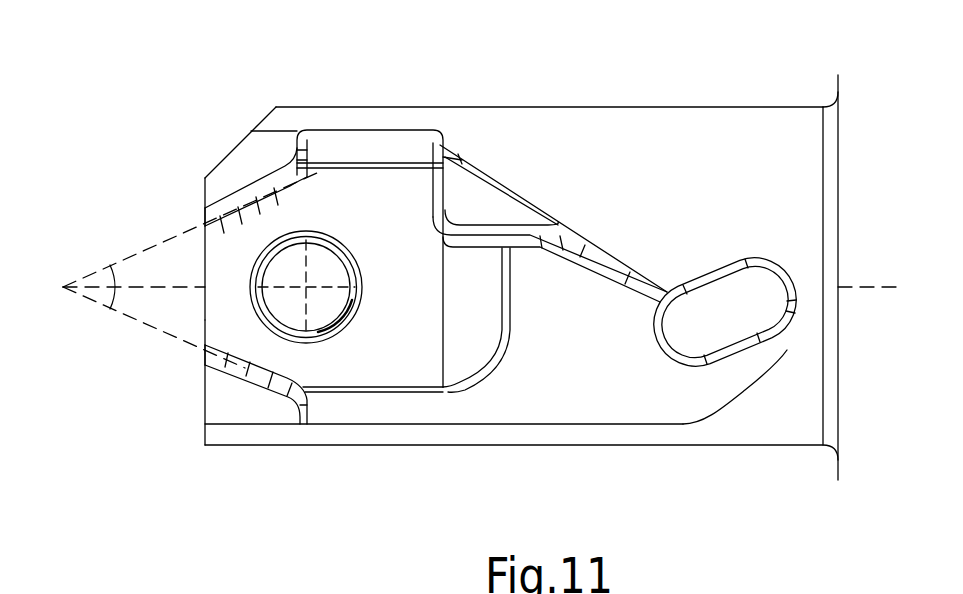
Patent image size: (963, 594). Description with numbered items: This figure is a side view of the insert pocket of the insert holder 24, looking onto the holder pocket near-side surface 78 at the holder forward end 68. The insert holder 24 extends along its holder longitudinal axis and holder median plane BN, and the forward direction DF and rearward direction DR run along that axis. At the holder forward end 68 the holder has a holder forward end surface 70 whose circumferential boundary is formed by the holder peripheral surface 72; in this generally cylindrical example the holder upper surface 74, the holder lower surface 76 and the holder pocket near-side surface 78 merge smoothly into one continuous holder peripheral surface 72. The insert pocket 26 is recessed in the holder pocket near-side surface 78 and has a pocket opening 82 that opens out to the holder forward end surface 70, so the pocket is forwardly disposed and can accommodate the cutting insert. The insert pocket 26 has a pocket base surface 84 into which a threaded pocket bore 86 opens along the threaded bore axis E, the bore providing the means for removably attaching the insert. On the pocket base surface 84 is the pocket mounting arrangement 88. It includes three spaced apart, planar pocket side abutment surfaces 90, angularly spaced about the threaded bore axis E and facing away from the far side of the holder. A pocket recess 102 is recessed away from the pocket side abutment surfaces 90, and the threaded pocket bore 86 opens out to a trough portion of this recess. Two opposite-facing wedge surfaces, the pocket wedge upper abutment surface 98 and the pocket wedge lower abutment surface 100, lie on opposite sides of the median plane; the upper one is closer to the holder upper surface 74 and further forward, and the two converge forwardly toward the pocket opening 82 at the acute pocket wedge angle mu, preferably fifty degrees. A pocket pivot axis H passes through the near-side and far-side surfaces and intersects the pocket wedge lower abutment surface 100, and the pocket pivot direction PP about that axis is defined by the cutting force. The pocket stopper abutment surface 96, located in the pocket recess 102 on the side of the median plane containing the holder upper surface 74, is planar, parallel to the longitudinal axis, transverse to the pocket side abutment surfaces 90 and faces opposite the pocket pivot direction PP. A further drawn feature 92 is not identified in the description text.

The insert holder 24 is at (674, 77).
The insert pocket 26 is at (405, 353).
The holder forward end 68 is at (191, 185).
The holder forward end surface 70 is at (203, 403).
The holder peripheral surface 72 is at (498, 131).
The holder upper surface 74 is at (578, 107).
The holder lower surface 76 is at (653, 447).
The holder pocket near-side surface 78 is at (655, 196).
The pocket opening 82 is at (212, 310).
The pocket base surface 84 is at (420, 256).
The threaded pocket bore 86 is at (325, 244).
The pocket mounting arrangement 88 is at (332, 432).
The pocket side abutment surface 90 is at (273, 169).
The slot 92 is at (725, 312).
The pocket stopper abutment surface 96 is at (568, 248).
The pocket wedge upper abutment surface 98 is at (228, 224).
The pocket wedge lower abutment surface 100 is at (279, 367).
The pocket recess 102 is at (386, 192).
The threaded bore axis E is at (316, 270).
The pocket pivot axis H is at (253, 368).
The forward direction DF is at (62, 250).
The rearward direction DR is at (923, 258).
The holder longitudinal axis and holder median plane BN is at (847, 288).
The pocket pivot direction PP is at (227, 400).
The pocket wedge angle mu is at (121, 315).